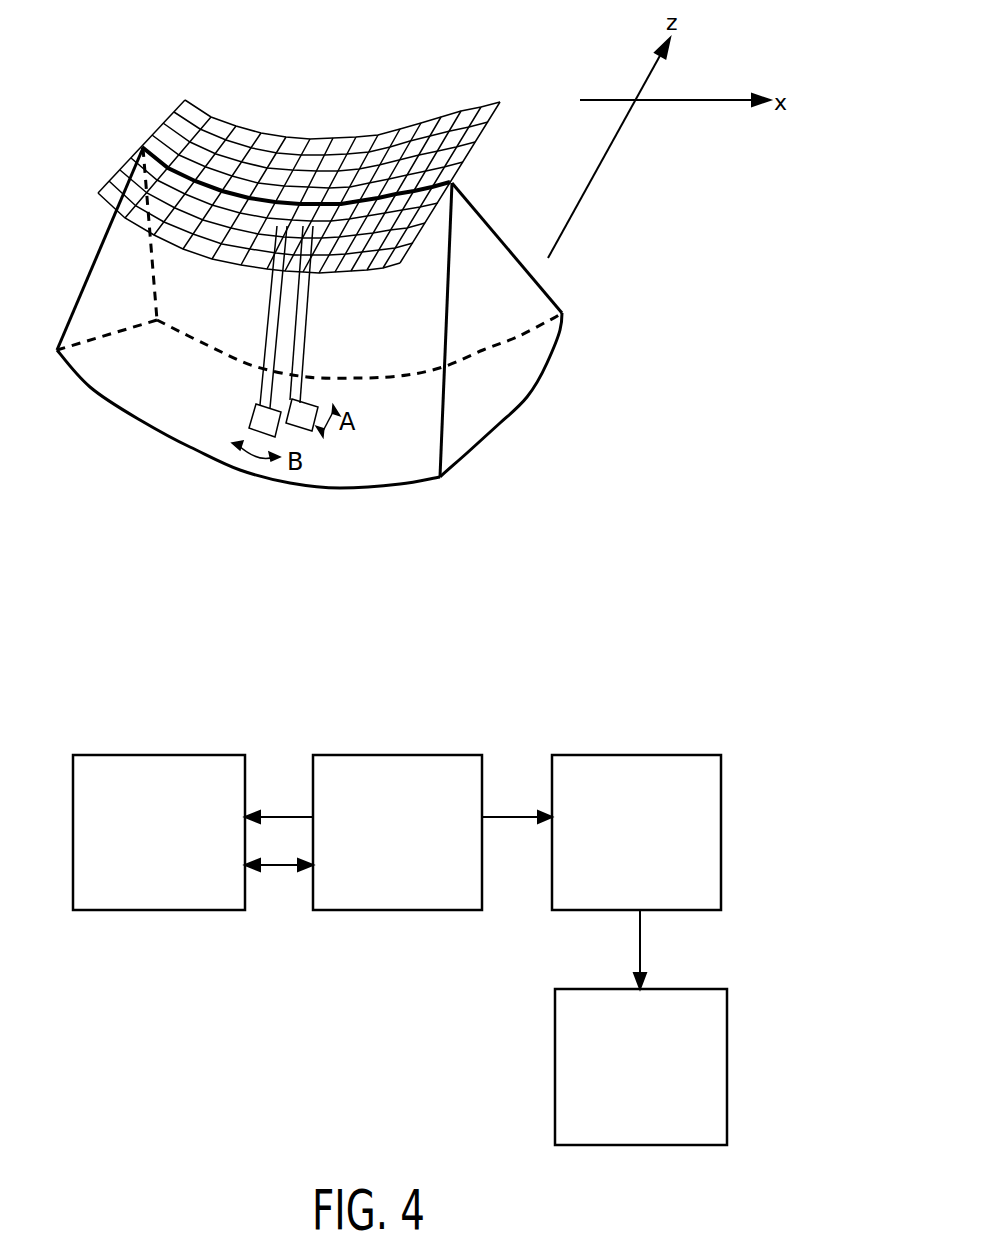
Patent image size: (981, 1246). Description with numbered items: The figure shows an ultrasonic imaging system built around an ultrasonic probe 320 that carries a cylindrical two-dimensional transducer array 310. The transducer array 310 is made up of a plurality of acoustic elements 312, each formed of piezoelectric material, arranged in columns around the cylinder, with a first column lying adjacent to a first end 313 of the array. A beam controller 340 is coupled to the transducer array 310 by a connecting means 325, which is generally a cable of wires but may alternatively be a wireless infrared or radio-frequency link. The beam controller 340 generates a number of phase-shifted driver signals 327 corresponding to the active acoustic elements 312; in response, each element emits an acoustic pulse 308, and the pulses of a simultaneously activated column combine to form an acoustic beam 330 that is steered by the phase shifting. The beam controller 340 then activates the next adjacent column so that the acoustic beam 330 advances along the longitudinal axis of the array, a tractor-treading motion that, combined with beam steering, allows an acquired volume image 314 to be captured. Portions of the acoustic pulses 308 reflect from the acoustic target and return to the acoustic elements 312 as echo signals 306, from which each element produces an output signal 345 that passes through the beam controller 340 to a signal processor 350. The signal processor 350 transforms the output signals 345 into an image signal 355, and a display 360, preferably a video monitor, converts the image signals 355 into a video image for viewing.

The echo signals 306 is at (310, 318).
The acoustic pulse 308 is at (273, 320).
The two-dimensional transducer array 310 is at (492, 157).
The acoustic elements 312 is at (117, 178).
The first end 313 is at (167, 118).
The acquired volume image 314 is at (473, 427).
The ultrasonic probe 320 is at (163, 753).
The connecting means 325 is at (278, 873).
The driver signals 327 is at (280, 812).
The acoustic beam 330 is at (228, 367).
The beam controller 340 is at (420, 753).
The output signal 345 is at (512, 838).
The signal processor 350 is at (674, 753).
The image signal 355 is at (634, 959).
The display 360 is at (553, 1044).